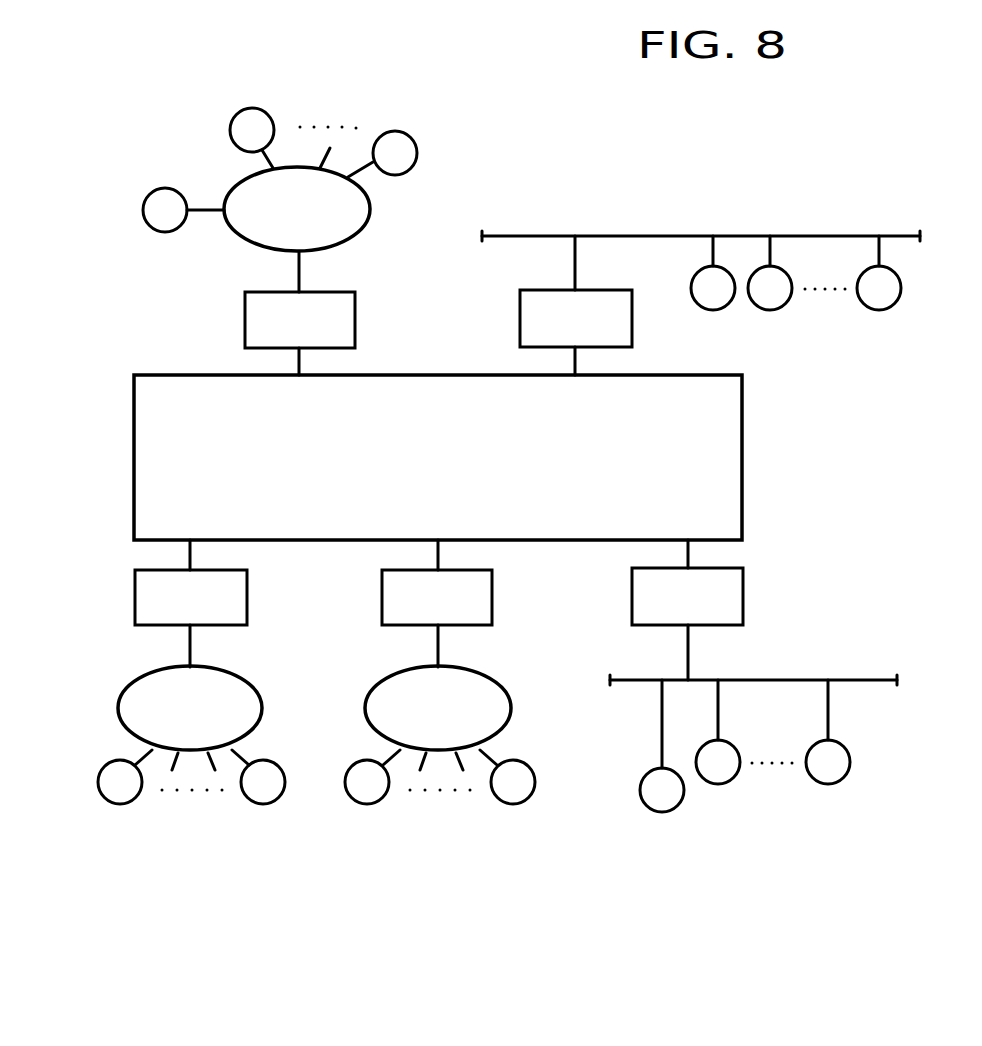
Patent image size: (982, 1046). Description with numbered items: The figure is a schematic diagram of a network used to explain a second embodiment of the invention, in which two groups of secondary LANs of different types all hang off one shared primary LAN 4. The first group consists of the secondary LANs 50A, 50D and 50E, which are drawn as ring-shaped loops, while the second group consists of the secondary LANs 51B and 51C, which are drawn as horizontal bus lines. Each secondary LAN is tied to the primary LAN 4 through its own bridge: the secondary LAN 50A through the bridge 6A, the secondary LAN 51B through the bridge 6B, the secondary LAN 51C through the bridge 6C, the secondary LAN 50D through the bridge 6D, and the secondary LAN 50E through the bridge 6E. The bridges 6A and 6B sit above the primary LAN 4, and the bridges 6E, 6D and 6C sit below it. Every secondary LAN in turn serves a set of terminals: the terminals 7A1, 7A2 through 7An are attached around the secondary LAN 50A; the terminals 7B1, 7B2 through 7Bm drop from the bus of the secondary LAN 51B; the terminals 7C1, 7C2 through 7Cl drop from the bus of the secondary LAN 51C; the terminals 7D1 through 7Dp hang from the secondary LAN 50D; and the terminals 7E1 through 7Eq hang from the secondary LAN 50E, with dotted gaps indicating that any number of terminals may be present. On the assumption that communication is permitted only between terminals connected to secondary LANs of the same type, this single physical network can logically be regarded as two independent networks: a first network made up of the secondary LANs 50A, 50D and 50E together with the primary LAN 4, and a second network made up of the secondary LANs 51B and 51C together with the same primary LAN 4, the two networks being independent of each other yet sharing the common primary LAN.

The primary LAN 4 is at (743, 461).
The bridge 6A is at (245, 320).
The bridge 6B is at (520, 320).
The bridge 6C is at (745, 597).
The bridge 6D is at (494, 597).
The bridge 6E is at (248, 597).
The secondary LAN 50A is at (357, 233).
The secondary LAN 50D is at (507, 692).
The secondary LAN 50E is at (258, 692).
The secondary LAN 51B is at (905, 234).
The secondary LAN 51C is at (884, 678).
The terminal 7A1 is at (143, 210).
The terminal 7A2 is at (252, 108).
The terminal 7An is at (395, 131).
The terminal 7B1 is at (713, 310).
The terminal 7B2 is at (770, 310).
The terminal 7Bm is at (879, 310).
The terminal 7C1 is at (662, 812).
The terminal 7C2 is at (718, 784).
The terminal 7Cl is at (828, 784).
The terminal 7D1 is at (367, 805).
The terminal 7Dp is at (513, 805).
The terminal 7E1 is at (120, 805).
The terminal 7Eq is at (263, 805).